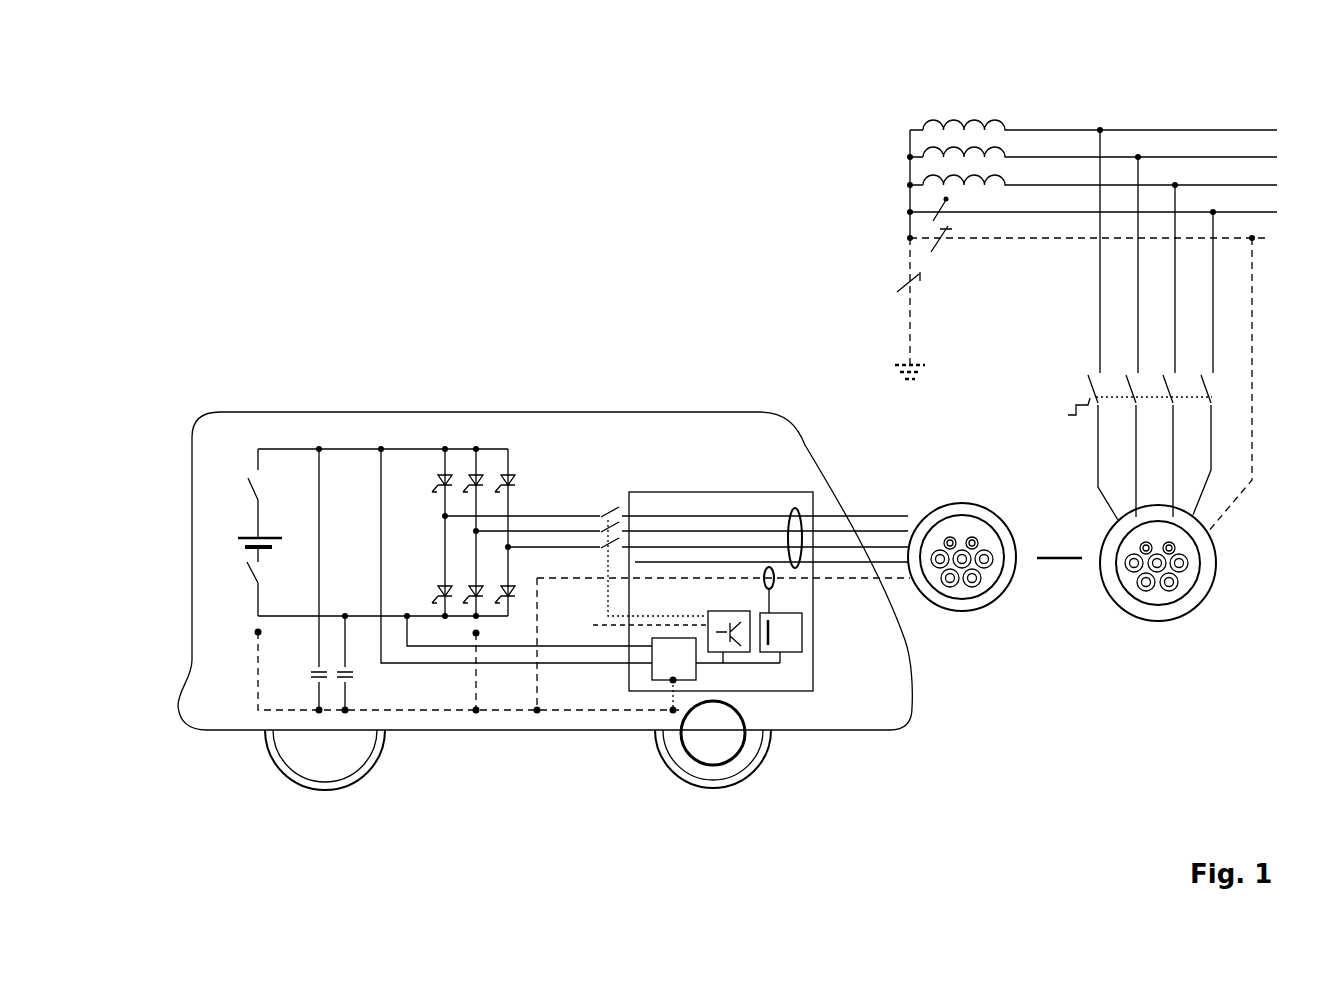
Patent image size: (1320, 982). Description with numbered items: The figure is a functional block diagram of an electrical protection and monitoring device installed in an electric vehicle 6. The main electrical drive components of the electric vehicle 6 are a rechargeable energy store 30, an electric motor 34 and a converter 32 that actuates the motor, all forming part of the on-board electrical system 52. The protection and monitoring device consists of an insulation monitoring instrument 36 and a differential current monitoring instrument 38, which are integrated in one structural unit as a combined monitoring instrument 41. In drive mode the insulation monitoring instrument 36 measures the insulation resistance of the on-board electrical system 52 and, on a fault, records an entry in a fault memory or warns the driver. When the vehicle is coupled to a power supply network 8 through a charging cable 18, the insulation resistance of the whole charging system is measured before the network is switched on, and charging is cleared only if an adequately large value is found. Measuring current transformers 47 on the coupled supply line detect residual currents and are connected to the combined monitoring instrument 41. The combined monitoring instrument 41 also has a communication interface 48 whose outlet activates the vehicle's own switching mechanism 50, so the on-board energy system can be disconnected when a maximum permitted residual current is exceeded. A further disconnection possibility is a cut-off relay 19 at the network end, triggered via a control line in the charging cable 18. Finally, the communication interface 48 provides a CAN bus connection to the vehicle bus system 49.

The electric vehicle 6 is at (378, 290).
The power supply network 8 is at (1200, 165).
The charging cable 18 is at (1067, 560).
The cut-off relay 19 is at (1062, 393).
The rechargeable energy store 30 is at (252, 543).
The converter 32 is at (457, 470).
The electric motor 34 is at (712, 748).
The insulation monitoring instrument 36 is at (660, 672).
The differential current monitoring instrument 38 is at (793, 630).
The combined monitoring instrument 41 is at (710, 492).
The measuring current transformers 47 is at (910, 466).
The communication interface 48 is at (737, 643).
The vehicle bus system 49 is at (602, 627).
The switching mechanism 50 is at (610, 512).
The on-board electrical system 52 is at (350, 449).